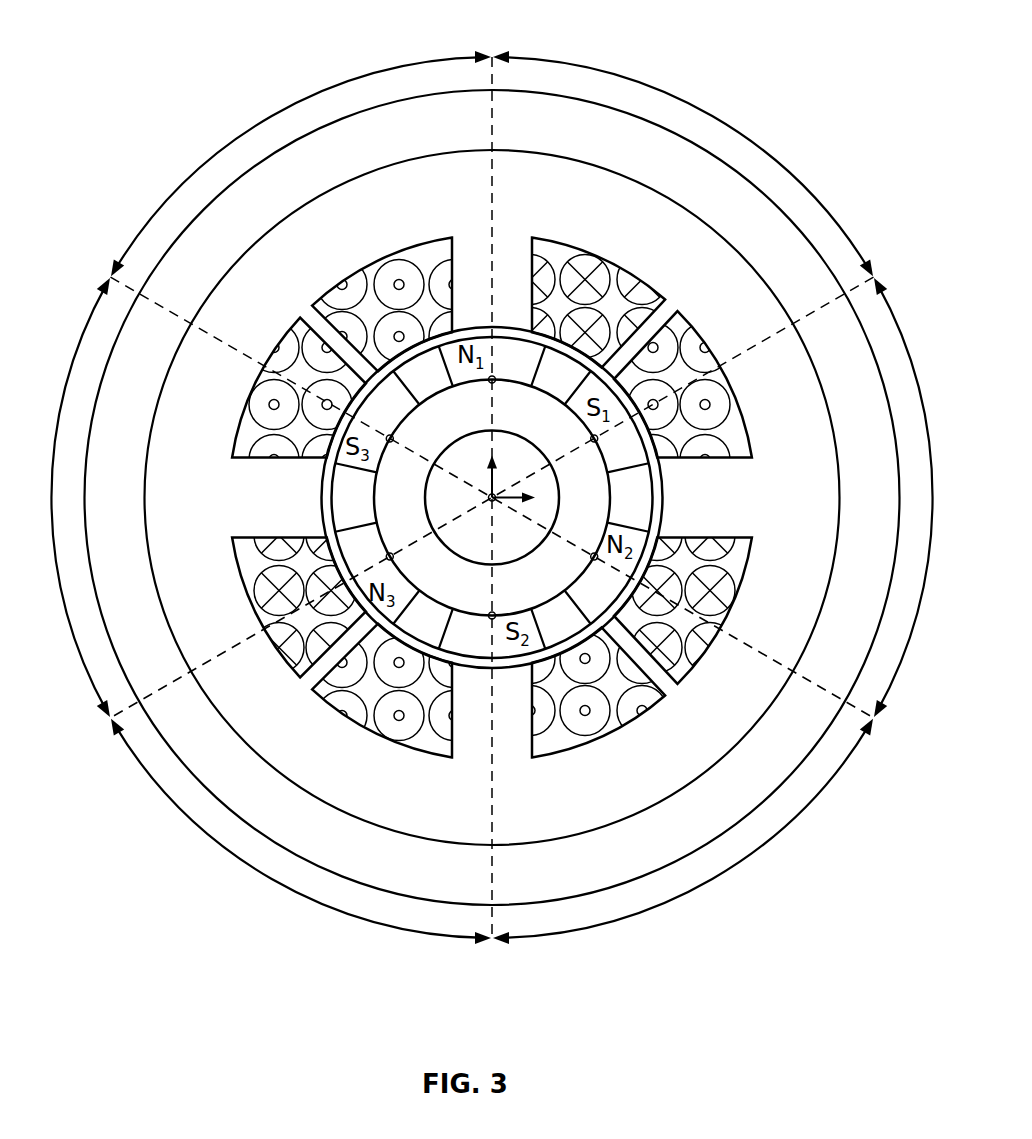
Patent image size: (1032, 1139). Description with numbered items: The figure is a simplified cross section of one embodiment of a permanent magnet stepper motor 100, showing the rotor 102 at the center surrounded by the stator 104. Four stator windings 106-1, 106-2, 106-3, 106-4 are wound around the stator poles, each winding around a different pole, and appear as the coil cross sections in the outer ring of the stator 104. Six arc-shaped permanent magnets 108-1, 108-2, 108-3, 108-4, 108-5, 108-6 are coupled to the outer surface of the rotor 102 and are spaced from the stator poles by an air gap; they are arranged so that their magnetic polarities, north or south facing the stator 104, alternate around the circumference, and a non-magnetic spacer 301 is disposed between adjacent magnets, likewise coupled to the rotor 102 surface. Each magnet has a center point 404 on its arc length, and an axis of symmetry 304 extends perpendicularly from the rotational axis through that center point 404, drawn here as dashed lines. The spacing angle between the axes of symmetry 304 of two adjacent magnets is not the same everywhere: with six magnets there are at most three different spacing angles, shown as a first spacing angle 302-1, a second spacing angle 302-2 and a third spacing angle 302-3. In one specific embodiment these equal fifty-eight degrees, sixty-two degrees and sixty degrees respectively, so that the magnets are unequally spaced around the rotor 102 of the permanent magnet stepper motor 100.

The permanent magnet stepper motor 100 is at (822, 40).
The rotor 102 is at (438, 424).
The stator 104 is at (300, 246).
The stator winding 106-1 is at (647, 297).
The stator winding 106-2 is at (740, 544).
The stator winding 106-3 is at (396, 740).
The stator winding 106-4 is at (248, 462).
The permanent magnet 108-1 is at (573, 240).
The permanent magnet 108-2 is at (703, 420).
The permanent magnet 108-3 is at (638, 668).
The permanent magnet 108-4 is at (560, 725).
The permanent magnet 108-5 is at (263, 573).
The permanent magnet 108-6 is at (302, 318).
The non-magnetic spacer 301 is at (424, 358).
The first spacing angle 302-1 is at (664, 91).
The second spacing angle 302-2 is at (84, 332).
The third spacing angle 302-3 is at (226, 147).
The axis of symmetry 304 is at (495, 72).
The center point 404 is at (496, 383).